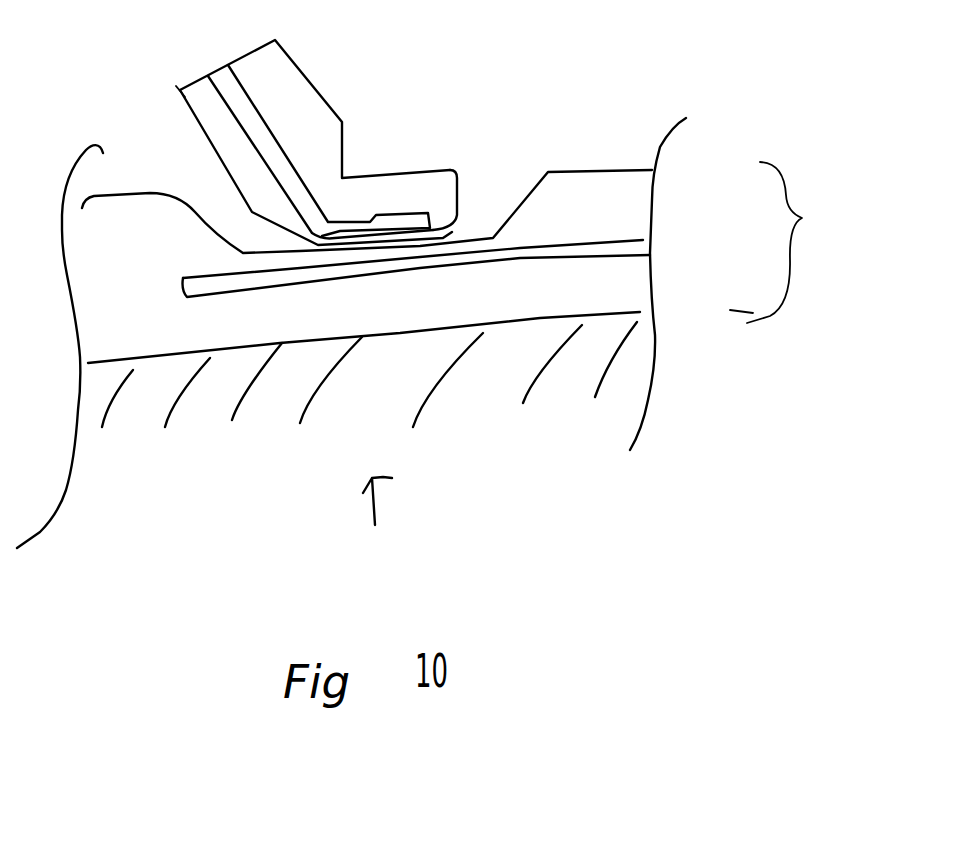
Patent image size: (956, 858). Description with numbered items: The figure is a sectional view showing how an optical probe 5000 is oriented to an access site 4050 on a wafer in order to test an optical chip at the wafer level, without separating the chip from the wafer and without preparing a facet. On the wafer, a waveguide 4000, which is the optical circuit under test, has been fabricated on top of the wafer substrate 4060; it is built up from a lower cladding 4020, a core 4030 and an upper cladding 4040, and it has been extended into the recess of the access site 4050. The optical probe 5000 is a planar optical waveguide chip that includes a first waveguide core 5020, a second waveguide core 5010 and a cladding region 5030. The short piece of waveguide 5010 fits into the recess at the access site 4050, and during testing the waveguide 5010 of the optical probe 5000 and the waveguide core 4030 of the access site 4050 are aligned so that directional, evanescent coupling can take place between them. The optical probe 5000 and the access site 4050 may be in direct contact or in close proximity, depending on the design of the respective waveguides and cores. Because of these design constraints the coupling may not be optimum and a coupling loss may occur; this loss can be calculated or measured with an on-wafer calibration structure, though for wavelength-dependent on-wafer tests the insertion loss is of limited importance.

The waveguide 4000 is at (448, 333).
The lower cladding 4020 is at (637, 288).
The core 4030 is at (632, 247).
The upper cladding 4040 is at (633, 202).
The access site 4050 is at (516, 185).
The wafer substrate 4060 is at (510, 388).
The optical probe 5000 is at (407, 112).
The second waveguide core 5010 is at (375, 222).
The first waveguide core 5020 is at (233, 108).
The cladding region 5030 is at (453, 180).